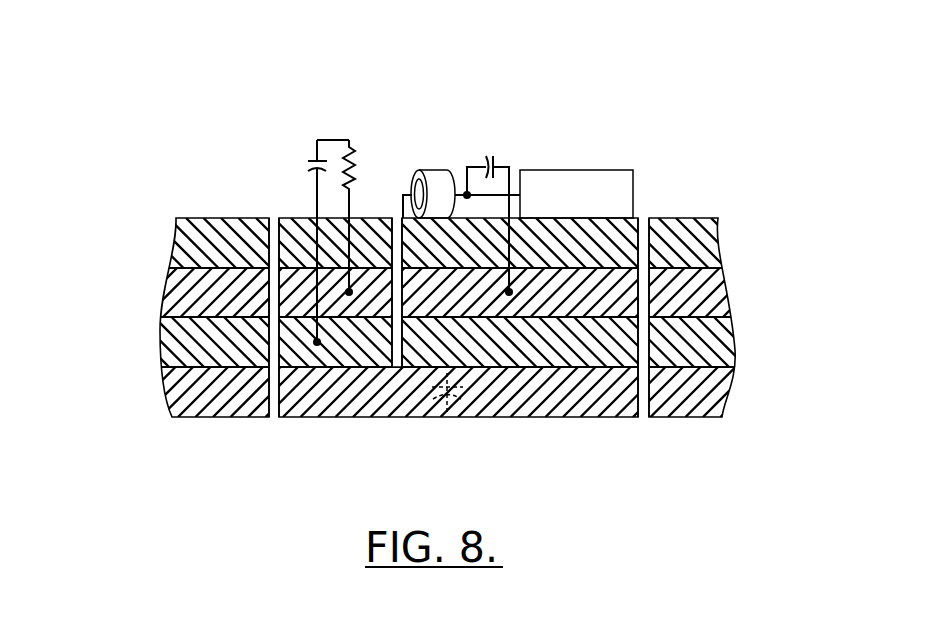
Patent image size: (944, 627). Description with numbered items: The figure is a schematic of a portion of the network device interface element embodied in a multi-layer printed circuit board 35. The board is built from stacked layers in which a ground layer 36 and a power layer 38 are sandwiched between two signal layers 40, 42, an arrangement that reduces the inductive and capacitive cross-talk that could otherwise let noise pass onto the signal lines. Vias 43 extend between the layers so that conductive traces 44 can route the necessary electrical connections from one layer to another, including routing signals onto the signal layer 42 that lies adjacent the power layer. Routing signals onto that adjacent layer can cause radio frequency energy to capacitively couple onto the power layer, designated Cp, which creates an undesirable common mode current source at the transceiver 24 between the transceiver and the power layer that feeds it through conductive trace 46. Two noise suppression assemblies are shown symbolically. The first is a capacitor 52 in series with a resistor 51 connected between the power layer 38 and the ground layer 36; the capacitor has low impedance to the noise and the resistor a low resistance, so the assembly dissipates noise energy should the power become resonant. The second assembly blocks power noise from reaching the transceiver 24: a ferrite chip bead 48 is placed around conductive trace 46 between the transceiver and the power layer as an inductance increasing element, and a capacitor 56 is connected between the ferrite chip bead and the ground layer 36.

The transceiver 24 is at (617, 170).
The printed circuit board 35 is at (446, 58).
The ground layer 36 is at (172, 288).
The power layer 38 is at (162, 337).
The signal layer 40 is at (177, 238).
The signal layer 42 is at (167, 397).
The via 43 is at (275, 404).
The conductive trace 44 is at (248, 217).
The conductive trace 46 is at (407, 193).
The ferrite chip bead 48 is at (427, 170).
The resistor 51 is at (360, 130).
The capacitor 52 is at (303, 144).
The capacitor 56 is at (495, 150).
The capacitive coupling Cp is at (472, 403).